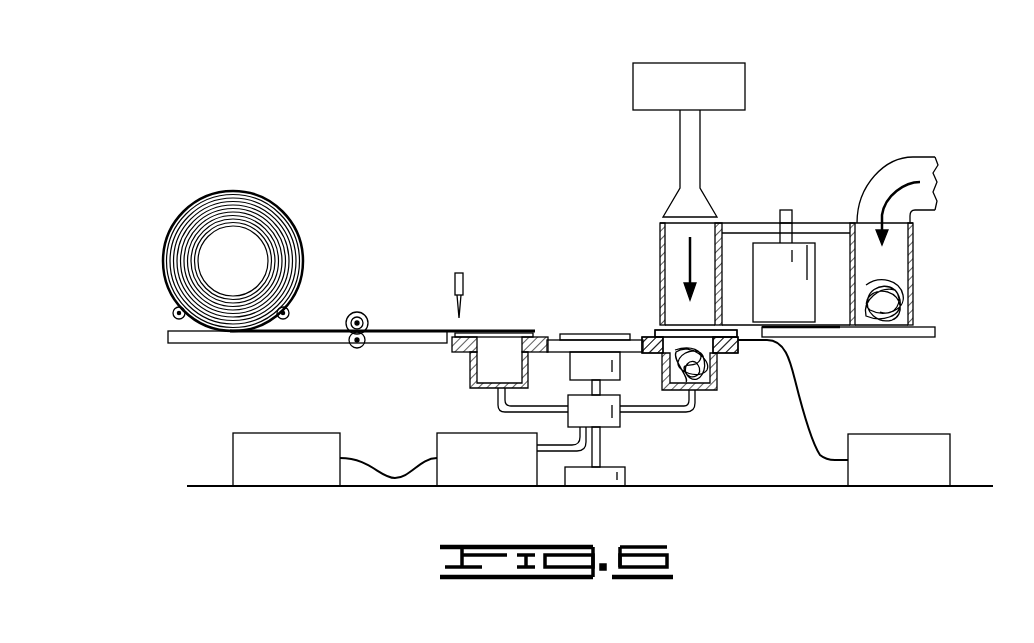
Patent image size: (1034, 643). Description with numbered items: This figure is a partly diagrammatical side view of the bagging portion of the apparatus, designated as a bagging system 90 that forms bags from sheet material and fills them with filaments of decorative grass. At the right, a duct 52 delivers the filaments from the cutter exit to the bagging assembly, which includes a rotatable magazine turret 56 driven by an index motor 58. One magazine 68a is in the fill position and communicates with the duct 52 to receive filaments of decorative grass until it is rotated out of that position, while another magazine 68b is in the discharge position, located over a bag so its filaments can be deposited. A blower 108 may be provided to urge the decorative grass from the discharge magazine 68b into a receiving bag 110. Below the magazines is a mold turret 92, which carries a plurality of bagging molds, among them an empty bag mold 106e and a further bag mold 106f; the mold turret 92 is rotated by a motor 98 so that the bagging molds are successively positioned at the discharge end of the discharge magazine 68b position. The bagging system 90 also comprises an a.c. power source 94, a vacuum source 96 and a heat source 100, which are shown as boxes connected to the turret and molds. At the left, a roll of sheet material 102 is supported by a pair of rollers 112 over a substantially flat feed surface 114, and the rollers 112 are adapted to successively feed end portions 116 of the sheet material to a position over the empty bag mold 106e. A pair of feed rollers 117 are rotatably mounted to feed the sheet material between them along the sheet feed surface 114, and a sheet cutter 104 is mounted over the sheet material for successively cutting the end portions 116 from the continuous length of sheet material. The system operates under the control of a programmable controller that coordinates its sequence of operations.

The duct 52 is at (912, 157).
The rotatable magazine turret 56 is at (825, 211).
The index motor 58 is at (797, 300).
The magazine in fill position 68a is at (887, 262).
The magazine in discharge position 68b is at (673, 245).
The bagging system 90 is at (407, 188).
The mold turret 92 is at (548, 328).
The a.c. power source 94 is at (244, 433).
The vacuum source 96 is at (437, 434).
The motor 98 is at (602, 413).
The heat source 100 is at (917, 434).
The roll of sheet material 102 is at (215, 208).
The sheet cutter 104 is at (459, 273).
The empty bag mold 106e is at (490, 370).
The bag mold 106f is at (698, 383).
The blower 108 is at (722, 63).
The receiving bag 110 is at (717, 363).
The pair of rollers 112 is at (173, 314).
The feed surface 114 is at (420, 337).
The end portions of sheet material 116 is at (490, 330).
The pair of feed rollers 117 is at (363, 312).